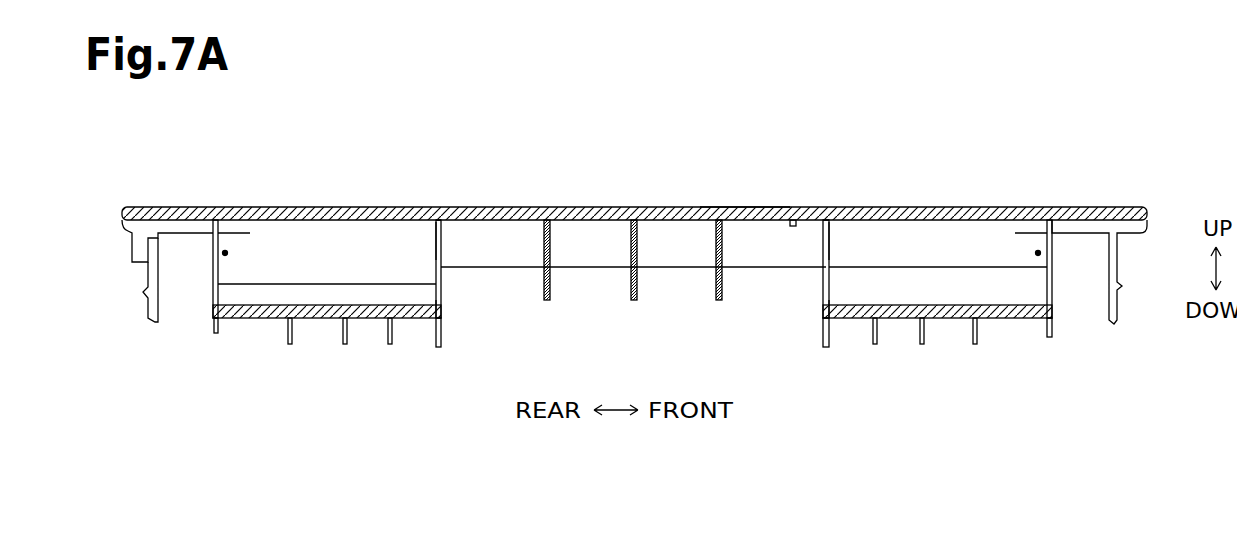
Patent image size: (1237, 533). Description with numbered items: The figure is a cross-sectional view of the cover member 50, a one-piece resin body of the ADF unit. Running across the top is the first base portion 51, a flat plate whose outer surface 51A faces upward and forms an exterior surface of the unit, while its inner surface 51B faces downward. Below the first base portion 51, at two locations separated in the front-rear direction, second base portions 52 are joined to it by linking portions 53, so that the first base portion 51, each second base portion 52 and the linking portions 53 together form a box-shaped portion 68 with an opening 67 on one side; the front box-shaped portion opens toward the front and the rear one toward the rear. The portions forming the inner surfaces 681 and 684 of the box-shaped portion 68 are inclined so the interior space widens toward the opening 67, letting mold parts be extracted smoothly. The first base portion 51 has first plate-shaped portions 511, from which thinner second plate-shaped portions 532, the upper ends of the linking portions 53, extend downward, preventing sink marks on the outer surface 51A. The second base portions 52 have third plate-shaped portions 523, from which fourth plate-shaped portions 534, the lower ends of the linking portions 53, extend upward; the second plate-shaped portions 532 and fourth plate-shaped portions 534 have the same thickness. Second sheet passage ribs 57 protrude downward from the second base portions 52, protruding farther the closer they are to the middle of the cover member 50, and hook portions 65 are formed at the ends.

The cover member 50 is at (1107, 216).
The first base portion 51 is at (586, 208).
The outer surface 51A is at (744, 207).
The inner surface 51B is at (792, 226).
The first plate-shaped portion 511 is at (438, 219).
The second base portion 52 is at (238, 322).
The third plate-shaped portion 523 is at (430, 320).
The linking portion 53 is at (251, 257).
The second plate-shaped portion 532 is at (434, 224).
The fourth plate-shaped portion 534 is at (443, 304).
The second sheet passage rib 57 is at (212, 338).
The hook portion 65 is at (147, 300).
The opening 67 is at (221, 253).
The box-shaped portion 68 is at (285, 236).
The inner surface of box-shaped portion 681 is at (324, 234).
The inner surface of box-shaped portion 684 is at (250, 304).